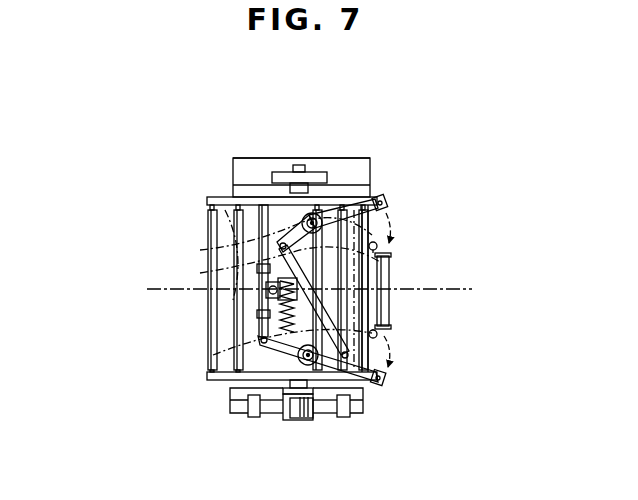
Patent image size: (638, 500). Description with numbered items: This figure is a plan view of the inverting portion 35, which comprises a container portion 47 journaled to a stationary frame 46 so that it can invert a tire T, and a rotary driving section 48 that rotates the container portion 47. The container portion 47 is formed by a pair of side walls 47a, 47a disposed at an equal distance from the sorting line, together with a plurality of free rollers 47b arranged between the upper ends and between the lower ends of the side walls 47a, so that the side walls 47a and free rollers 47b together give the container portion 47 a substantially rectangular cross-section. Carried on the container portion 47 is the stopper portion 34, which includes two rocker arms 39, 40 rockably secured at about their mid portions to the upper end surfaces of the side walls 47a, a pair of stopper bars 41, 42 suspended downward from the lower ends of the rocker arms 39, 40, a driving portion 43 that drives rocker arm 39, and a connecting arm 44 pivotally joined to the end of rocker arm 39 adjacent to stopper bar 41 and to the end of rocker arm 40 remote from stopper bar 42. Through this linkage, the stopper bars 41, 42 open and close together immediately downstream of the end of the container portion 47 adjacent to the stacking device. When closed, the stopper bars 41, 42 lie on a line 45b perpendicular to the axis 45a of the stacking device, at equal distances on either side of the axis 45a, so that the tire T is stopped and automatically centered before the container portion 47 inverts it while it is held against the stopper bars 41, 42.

The stopper portion 34 is at (258, 320).
The inverting portion 35 is at (197, 224).
The rocker arm 39 is at (349, 383).
The rocker arm 40 is at (350, 214).
The stopper bar 41 is at (383, 381).
The stopper bar 42 is at (385, 203).
The driving portion 43 is at (268, 294).
The connecting arm 44 is at (226, 200).
The axis of the stacking device 45a is at (470, 289).
The line perpendicular to the axis 45b is at (387, 229).
The stationary frame 46 is at (313, 158).
The container portion 47 is at (229, 166).
The side wall 47a is at (249, 200).
The free roller 47b is at (250, 252).
The rotary driving section 48 is at (291, 420).
The tire T is at (300, 277).